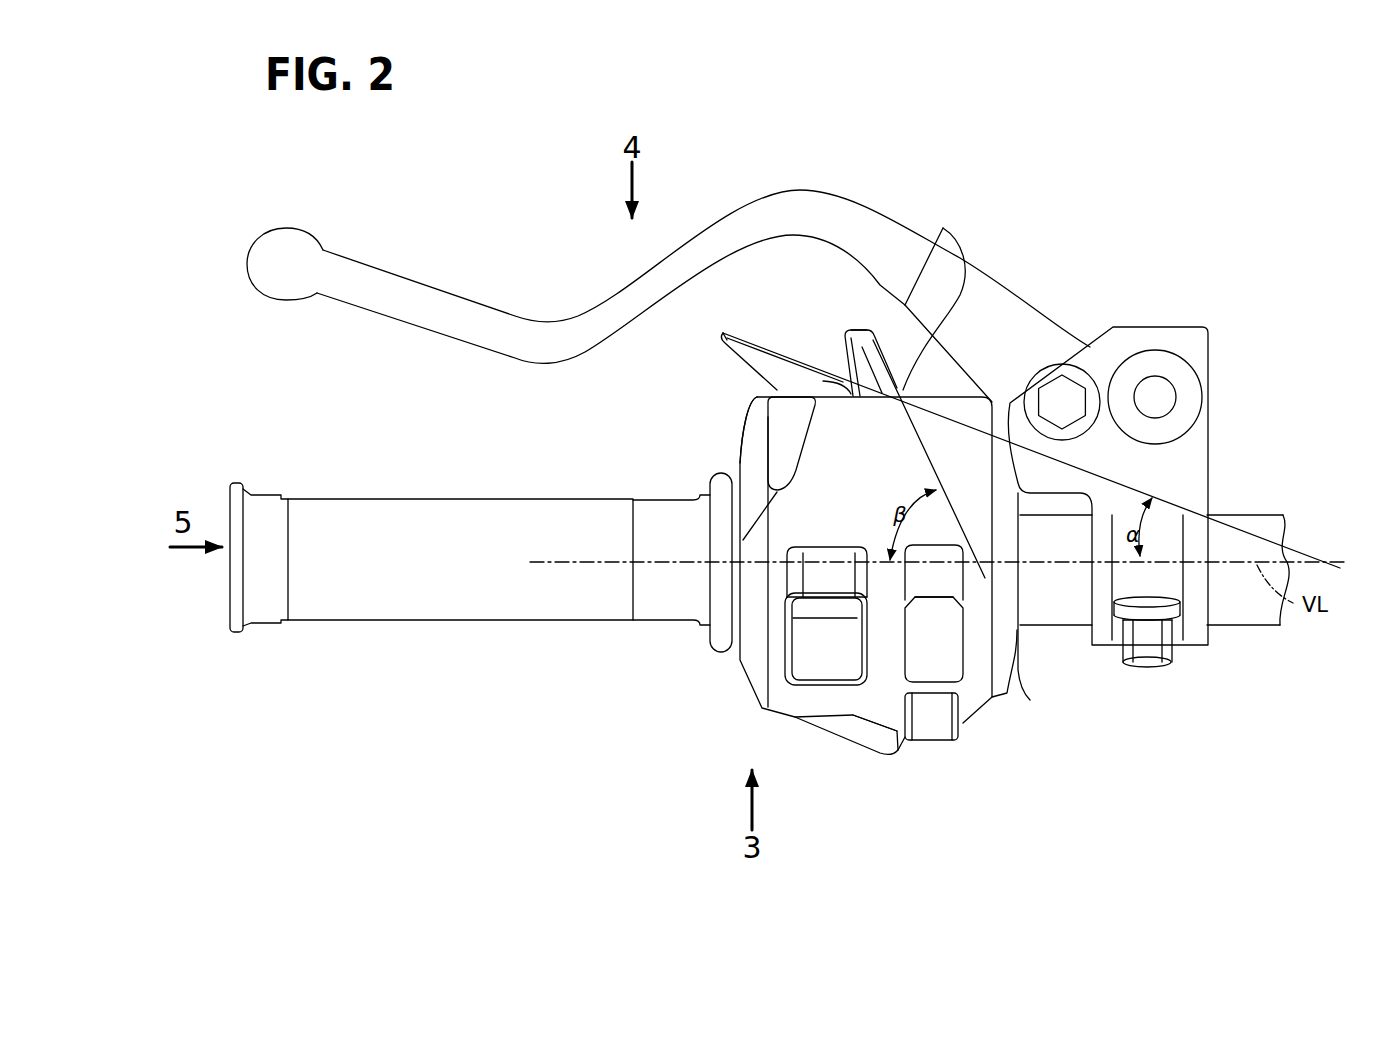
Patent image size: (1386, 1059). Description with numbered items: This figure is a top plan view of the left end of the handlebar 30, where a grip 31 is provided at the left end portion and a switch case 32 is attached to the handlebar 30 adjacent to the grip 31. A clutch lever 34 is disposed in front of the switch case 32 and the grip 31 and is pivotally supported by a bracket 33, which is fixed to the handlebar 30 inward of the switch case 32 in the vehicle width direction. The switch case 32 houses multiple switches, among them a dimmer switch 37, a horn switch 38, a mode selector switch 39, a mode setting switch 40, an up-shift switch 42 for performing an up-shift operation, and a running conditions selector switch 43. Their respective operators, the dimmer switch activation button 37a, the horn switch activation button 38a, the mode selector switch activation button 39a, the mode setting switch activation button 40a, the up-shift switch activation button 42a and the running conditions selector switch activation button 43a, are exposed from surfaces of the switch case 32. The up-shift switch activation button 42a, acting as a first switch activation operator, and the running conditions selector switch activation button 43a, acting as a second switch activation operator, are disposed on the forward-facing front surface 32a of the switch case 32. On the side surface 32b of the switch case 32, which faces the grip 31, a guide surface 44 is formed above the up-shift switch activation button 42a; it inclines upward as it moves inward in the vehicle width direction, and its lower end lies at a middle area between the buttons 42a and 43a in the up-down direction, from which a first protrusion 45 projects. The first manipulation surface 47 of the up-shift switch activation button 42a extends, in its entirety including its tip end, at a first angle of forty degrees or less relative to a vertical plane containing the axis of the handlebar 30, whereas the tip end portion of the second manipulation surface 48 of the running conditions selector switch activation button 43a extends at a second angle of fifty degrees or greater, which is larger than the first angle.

The handlebar 30 is at (1043, 620).
The grip 31 is at (448, 613).
The switch case 32 is at (973, 405).
The front surface 32a is at (882, 347).
The side surface 32b is at (753, 545).
The bracket 33 is at (1158, 335).
The clutch lever 34 is at (771, 207).
The dimmer switch 37 is at (781, 658).
The dimmer switch activation button 37a is at (823, 673).
The horn switch 38 is at (861, 751).
The horn switch activation button 38a is at (887, 743).
The mode selector switch 39 is at (970, 623).
The mode selector switch activation button 39a is at (955, 650).
The mode setting switch 40 is at (968, 727).
The mode setting switch activation button 40a is at (945, 733).
The up-shift switch 42 is at (726, 357).
The up-shift switch activation button 42a is at (723, 333).
The running conditions selector switch 43 is at (880, 339).
The running conditions selector switch activation button 43a is at (863, 330).
The guide surface 44 is at (752, 408).
The first protrusion 45 is at (757, 400).
The first manipulation surface 47 is at (787, 355).
The second manipulation surface 48 is at (962, 270).